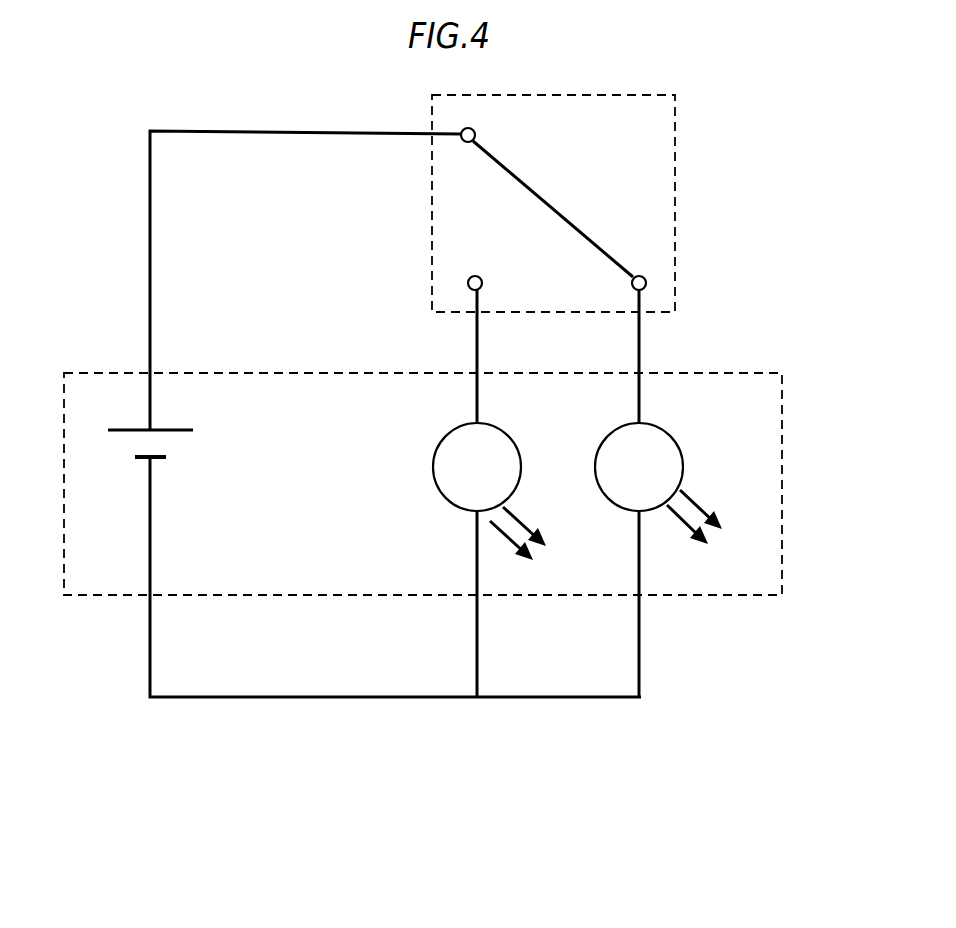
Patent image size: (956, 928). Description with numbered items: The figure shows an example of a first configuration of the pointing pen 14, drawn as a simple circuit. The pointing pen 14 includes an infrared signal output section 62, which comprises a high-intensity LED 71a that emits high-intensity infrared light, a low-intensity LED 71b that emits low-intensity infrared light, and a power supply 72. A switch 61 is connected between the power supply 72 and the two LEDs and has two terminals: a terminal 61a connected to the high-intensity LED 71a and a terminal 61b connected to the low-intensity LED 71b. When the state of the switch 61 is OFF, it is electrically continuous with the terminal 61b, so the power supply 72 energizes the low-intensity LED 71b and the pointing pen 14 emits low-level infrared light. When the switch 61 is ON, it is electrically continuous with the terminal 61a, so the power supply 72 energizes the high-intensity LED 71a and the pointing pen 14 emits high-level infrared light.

The pointing pen 14 is at (422, 747).
The switch 61 is at (676, 200).
The terminal 61a is at (483, 283).
The terminal 61b is at (647, 283).
The infrared signal output section 62 is at (783, 437).
The high-intensity LED 71a is at (500, 431).
The low-intensity LED 71b is at (663, 431).
The power supply 72 is at (163, 430).